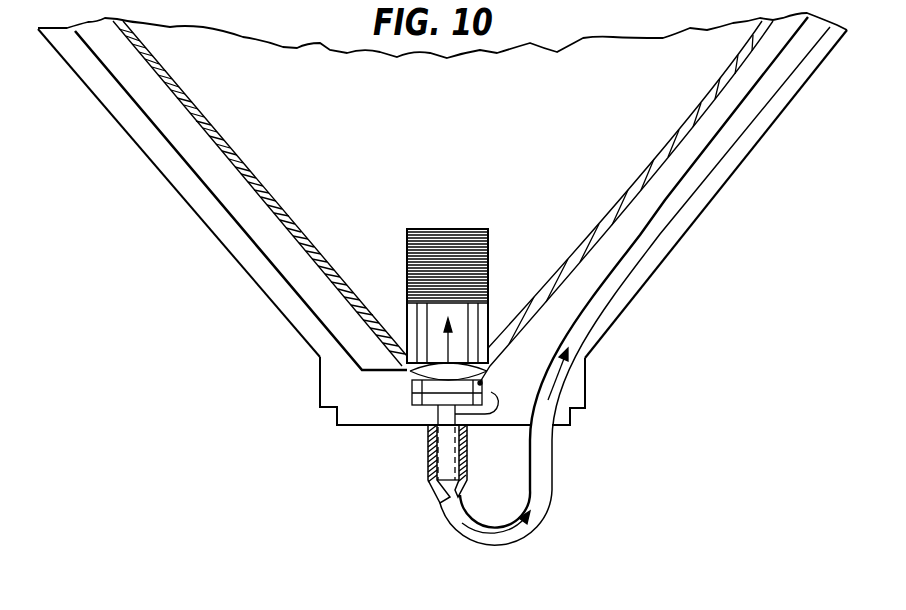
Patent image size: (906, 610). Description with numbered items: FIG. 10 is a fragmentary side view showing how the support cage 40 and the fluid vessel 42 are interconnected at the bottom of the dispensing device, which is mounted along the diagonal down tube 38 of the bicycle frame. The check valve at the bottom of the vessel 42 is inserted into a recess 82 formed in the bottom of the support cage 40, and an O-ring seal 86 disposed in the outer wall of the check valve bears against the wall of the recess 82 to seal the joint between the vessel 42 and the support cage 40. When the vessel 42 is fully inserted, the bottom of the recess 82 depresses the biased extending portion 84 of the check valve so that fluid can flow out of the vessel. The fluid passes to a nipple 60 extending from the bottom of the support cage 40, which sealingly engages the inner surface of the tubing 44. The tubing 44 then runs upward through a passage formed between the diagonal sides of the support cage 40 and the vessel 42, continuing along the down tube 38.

The down tube 38 is at (713, 203).
The support cage 40 is at (320, 388).
The fluid vessel 42 is at (672, 152).
The tubing 44 is at (547, 472).
The nipple 60 is at (443, 463).
The recess 82 is at (490, 336).
The extending portion 84 is at (482, 383).
The O-ring seal 86 is at (413, 391).